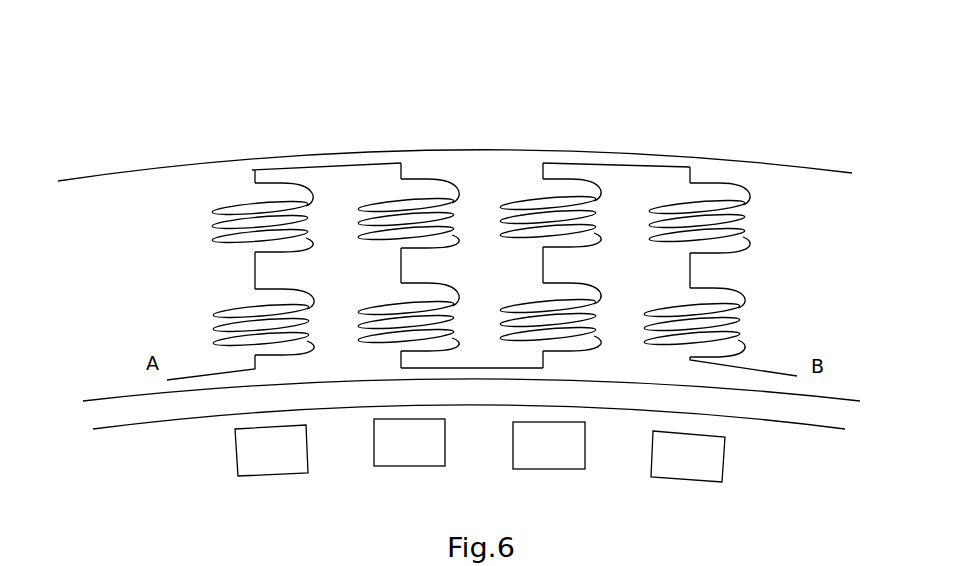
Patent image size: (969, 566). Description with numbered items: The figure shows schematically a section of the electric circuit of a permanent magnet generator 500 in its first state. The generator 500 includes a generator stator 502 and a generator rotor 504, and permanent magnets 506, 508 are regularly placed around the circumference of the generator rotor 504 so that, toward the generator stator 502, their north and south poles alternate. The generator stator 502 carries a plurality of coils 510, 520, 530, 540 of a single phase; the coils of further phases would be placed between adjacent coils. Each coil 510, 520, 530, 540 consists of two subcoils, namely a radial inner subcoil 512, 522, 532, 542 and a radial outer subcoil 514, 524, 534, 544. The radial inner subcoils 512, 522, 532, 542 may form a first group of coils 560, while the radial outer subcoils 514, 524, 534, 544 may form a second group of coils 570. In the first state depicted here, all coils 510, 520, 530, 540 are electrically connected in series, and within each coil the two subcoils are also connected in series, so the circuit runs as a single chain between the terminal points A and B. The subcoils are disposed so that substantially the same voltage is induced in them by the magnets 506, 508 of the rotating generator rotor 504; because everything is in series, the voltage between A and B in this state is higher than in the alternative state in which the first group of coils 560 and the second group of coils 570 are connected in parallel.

The permanent magnet generator 500 is at (459, 244).
The generator stator 502 is at (123, 234).
The generator rotor 504 is at (150, 476).
The permanent magnet 506 is at (270, 472).
The permanent magnet 508 is at (405, 461).
The coil 510 is at (214, 215).
The radial inner subcoil 512 is at (187, 342).
The radial outer subcoil 514 is at (207, 200).
The coil 520 is at (429, 204).
The radial inner subcoil 522 is at (458, 297).
The radial outer subcoil 524 is at (437, 170).
The coil 530 is at (574, 205).
The radial inner subcoil 532 is at (603, 298).
The radial outer subcoil 534 is at (578, 160).
The coil 540 is at (742, 209).
The radial inner subcoil 542 is at (748, 322).
The radial outer subcoil 544 is at (737, 178).
The first group of coils 560 is at (138, 337).
The second group of coils 570 is at (138, 243).